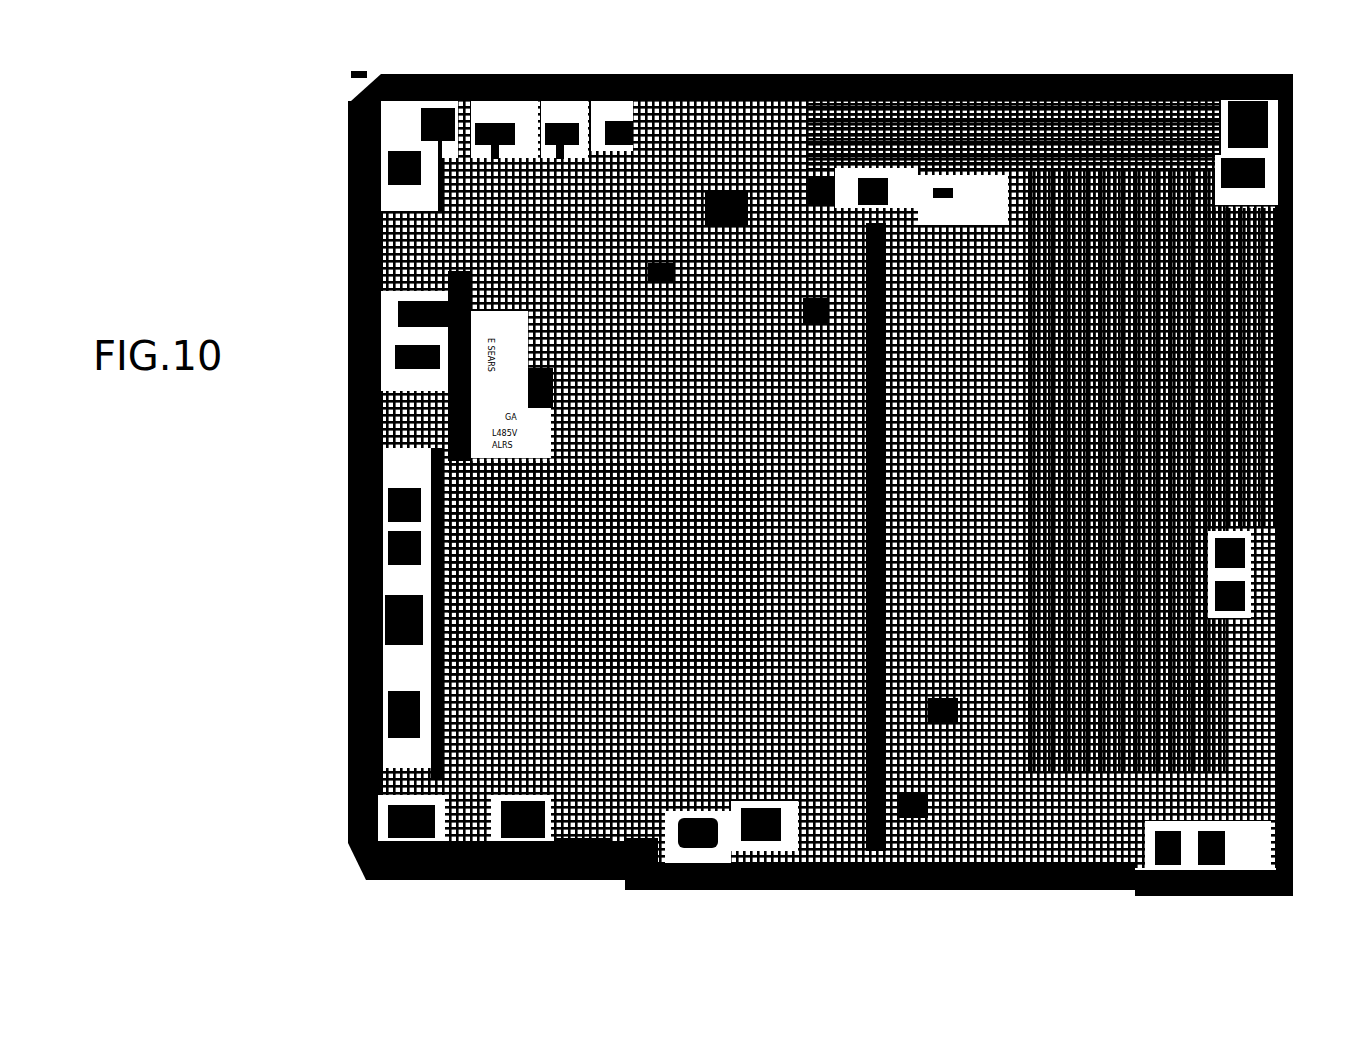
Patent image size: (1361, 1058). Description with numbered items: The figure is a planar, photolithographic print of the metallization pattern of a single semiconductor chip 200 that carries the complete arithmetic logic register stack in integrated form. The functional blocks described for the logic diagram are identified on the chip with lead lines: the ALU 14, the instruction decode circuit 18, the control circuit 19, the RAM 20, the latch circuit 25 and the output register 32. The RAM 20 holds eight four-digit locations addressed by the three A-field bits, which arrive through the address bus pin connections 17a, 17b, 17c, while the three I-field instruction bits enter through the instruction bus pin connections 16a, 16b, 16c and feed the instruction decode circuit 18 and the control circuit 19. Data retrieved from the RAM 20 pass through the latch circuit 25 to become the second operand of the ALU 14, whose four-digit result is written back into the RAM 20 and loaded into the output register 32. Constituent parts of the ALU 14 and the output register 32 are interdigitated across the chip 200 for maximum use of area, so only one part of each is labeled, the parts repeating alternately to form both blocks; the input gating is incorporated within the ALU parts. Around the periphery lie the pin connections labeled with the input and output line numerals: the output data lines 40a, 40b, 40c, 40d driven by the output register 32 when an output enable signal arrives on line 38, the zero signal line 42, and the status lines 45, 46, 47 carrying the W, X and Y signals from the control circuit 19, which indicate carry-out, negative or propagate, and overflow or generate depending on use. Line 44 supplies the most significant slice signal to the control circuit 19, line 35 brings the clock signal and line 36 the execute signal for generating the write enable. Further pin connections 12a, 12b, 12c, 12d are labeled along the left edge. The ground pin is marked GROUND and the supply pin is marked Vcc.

The semiconductor chip 200 is at (348, 871).
The pin connection 12a is at (382, 713).
The pin connection 12b is at (382, 493).
The pin connection 12c is at (395, 308).
The pin connection 12d is at (442, 103).
The output line pin connection 40a is at (381, 545).
The output line pin connection 40b is at (392, 350).
The output line pin connection 40c is at (385, 153).
The output line pin connection 40d is at (490, 118).
The W output line 45 is at (548, 118).
The ground pin connection GROUND is at (610, 115).
The control circuit 19 is at (652, 262).
The Y output line 47 is at (728, 200).
The X output line 46 is at (815, 170).
The latch circuit 25 is at (808, 300).
The zero output line 42 is at (882, 172).
The MSS input line 44 is at (1245, 107).
The clock line 35 is at (1250, 162).
The instruction bus pin connection 16a is at (525, 835).
The instruction bus pin connection 16b is at (1240, 582).
The instruction bus pin connection 16c is at (1240, 548).
The instruction decode circuit 18 is at (1190, 680).
The random access memory 20 is at (582, 603).
The output enable line 38 is at (382, 820).
The voltage supply pin Vcc is at (586, 870).
The execute line 36 is at (680, 845).
The address bus pin connection 17a is at (756, 835).
The address bus pin connection 17b is at (1160, 852).
The address bus pin connection 17c is at (1206, 852).
The arithmetic logic unit 14 is at (907, 800).
The output register 32 is at (935, 702).